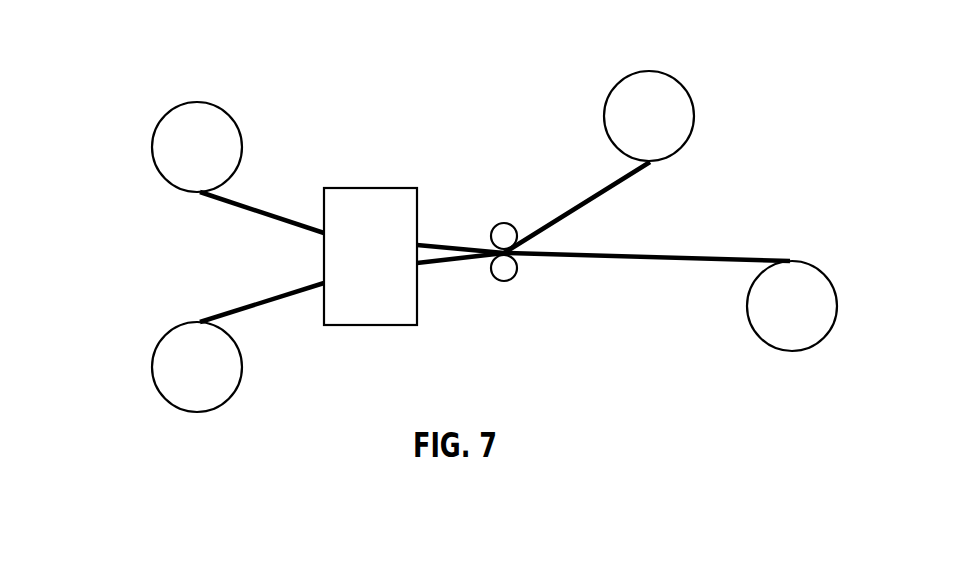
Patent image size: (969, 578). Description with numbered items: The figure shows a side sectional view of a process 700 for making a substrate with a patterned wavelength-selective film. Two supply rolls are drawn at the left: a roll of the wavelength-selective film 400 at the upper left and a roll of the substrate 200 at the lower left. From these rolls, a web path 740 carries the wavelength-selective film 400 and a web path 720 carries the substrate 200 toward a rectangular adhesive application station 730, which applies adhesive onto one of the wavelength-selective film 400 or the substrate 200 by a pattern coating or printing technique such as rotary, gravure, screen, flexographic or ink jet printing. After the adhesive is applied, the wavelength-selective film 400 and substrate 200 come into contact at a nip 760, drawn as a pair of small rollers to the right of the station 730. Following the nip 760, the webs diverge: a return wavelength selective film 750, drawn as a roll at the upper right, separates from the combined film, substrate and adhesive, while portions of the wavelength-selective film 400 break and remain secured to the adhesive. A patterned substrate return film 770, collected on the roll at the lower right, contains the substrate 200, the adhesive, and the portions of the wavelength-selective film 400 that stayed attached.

The coating system 700 is at (136, 43).
The wavelength-selective film 400 is at (195, 102).
The substrate 200 is at (155, 383).
The first web path 740 is at (267, 208).
The second web path 720 is at (253, 300).
The adhesive application station 730 is at (365, 187).
The nip 760 is at (505, 223).
The return wavelength selective film 750 is at (641, 72).
The patterned substrate return film 770 is at (793, 262).